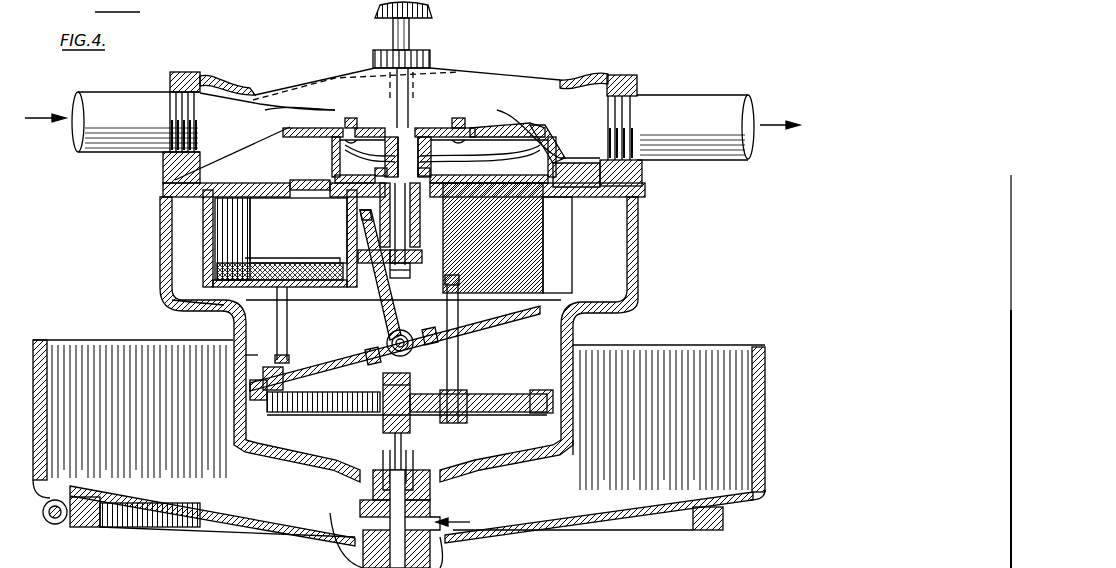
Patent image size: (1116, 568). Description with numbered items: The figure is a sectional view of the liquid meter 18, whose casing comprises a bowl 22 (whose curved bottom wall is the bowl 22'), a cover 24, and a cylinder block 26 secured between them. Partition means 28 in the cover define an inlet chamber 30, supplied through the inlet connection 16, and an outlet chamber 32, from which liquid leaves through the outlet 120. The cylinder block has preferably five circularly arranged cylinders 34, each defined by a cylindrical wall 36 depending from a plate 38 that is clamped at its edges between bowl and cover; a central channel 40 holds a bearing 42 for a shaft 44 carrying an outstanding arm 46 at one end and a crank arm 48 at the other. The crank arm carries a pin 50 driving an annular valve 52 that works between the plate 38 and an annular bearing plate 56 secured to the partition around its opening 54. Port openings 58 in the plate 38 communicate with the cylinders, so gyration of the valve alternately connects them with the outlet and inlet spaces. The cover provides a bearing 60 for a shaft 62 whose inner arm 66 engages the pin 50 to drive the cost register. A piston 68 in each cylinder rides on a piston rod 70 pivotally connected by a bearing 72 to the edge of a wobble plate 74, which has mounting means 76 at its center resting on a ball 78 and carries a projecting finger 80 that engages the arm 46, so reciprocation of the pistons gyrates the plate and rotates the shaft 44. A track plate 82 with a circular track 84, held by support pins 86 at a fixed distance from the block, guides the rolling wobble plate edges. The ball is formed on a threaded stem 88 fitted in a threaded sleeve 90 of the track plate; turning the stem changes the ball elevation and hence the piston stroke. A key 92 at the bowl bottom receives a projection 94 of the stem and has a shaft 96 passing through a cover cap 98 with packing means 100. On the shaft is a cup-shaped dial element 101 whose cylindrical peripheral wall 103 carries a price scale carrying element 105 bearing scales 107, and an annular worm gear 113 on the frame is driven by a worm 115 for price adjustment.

The inlet pipe 16 is at (134, 127).
The meter 18 is at (656, 298).
The bowl 22 is at (424, 339).
The bowl 22' is at (602, 454).
The cover 24 is at (450, 72).
The cylinder block 26 is at (540, 238).
The partition means 28 is at (498, 125).
The inlet chamber 30 is at (215, 100).
The outlet chamber 32 is at (602, 92).
The cylinders 34 is at (215, 233).
The coil core 36 is at (220, 266).
The plate 38 is at (645, 190).
The central channel 40 is at (368, 286).
The bearing 42 is at (420, 265).
The shaft 44 is at (410, 205).
The outstanding arm 46 is at (358, 255).
The crank arm 48 is at (440, 174).
The pin 50 is at (458, 118).
The valve 52 is at (332, 158).
The opening 54 is at (352, 118).
The annular bearing plate 56 is at (300, 128).
The port openings 58 is at (302, 190).
The bearing 60 is at (432, 48).
The shaft 62 is at (394, 40).
The arm 66 is at (412, 128).
The piston 68 is at (200, 310).
The piston rod 70 is at (277, 330).
The bearing 72 is at (250, 372).
The wobble plate 74 is at (505, 316).
The means 76 is at (418, 350).
The ball 78 is at (388, 340).
The finger 80 is at (360, 212).
The track plate 82 is at (262, 402).
The circular track 84 is at (312, 415).
The support pins 86 is at (458, 352).
The threaded stem 88 is at (383, 420).
The threaded sleeve 90 is at (383, 385).
The key 92 is at (450, 470).
The projection 94 is at (383, 456).
The shaft 96 is at (432, 502).
The cover cap 98 is at (360, 505).
The packing means 100 is at (473, 537).
The dial element 101 is at (620, 520).
The cylindrical peripheral wall 103 is at (755, 345).
The price scale carrying element 105 is at (766, 478).
The scale 107 is at (32, 345).
The annular worm gear 113 is at (85, 528).
The worm 115 is at (48, 514).
The outlet 120 is at (674, 105).